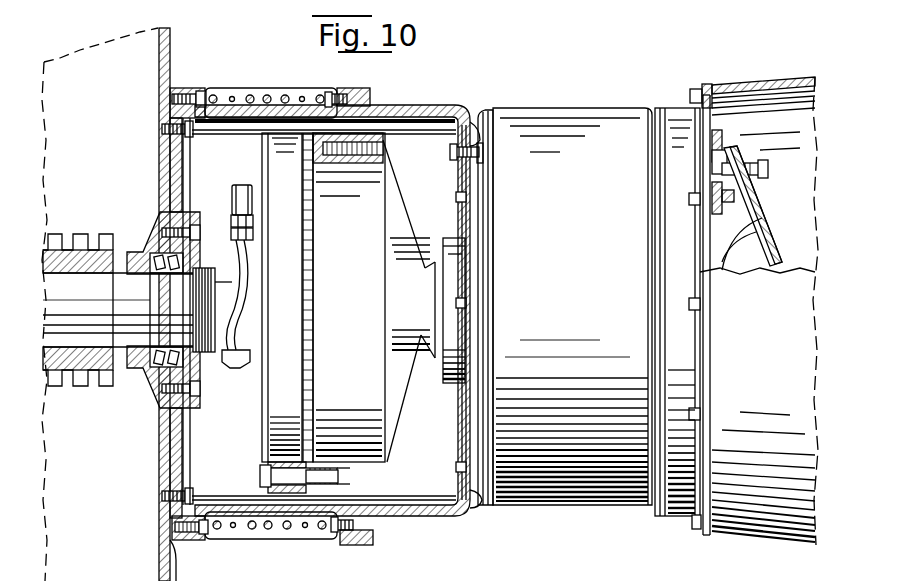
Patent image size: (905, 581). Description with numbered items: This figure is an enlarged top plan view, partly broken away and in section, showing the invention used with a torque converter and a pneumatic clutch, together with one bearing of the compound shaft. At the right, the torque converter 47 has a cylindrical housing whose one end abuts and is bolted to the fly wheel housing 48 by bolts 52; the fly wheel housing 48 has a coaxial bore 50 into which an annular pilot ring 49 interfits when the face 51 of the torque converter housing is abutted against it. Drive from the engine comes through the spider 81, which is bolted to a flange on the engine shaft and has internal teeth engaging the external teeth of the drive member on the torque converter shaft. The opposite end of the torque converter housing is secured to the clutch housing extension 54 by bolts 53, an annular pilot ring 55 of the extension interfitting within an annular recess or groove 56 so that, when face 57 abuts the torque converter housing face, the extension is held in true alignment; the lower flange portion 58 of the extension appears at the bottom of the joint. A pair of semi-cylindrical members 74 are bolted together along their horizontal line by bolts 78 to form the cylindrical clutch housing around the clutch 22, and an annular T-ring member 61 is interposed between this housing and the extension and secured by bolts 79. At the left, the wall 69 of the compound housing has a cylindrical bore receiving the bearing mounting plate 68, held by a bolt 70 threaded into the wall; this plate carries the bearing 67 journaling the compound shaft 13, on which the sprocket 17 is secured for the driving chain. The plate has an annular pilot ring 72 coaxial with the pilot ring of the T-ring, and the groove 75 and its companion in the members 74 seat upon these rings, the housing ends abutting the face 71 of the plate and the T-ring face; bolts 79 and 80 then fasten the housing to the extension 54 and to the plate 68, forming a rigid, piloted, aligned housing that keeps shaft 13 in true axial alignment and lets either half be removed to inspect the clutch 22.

The compound shaft 13 is at (224, 290).
The sprocket 17 is at (88, 390).
The clutch 22 is at (386, 455).
The torque converter 47 is at (622, 116).
The fly wheel housing 48 is at (765, 301).
The annular pilot ring 49 is at (692, 110).
The coaxial bore 50 is at (728, 98).
The face 51 is at (708, 88).
The bolts 52 is at (692, 527).
The bolts 53 is at (440, 263).
The clutch housing extension 54 is at (366, 108).
The annular pilot ring 55 is at (481, 166).
The annular recess or groove 56 is at (482, 152).
The face 57 is at (472, 130).
The housing flange 58 is at (470, 508).
The T-ring member 61 is at (357, 88).
The bearing 67 is at (158, 240).
The bearing mounting plate 68 is at (170, 165).
The wall of the compound housing 69 is at (171, 48).
The bolt 70 is at (162, 130).
The face 71 is at (181, 541).
The annular pilot ring 72 is at (212, 505).
The semi-cylindrical members 74 is at (231, 112).
The groove 75 is at (188, 90).
The bolts 78 is at (267, 94).
The bolts 79 is at (338, 84).
The bolts 80 is at (203, 540).
The spider 81 is at (760, 195).